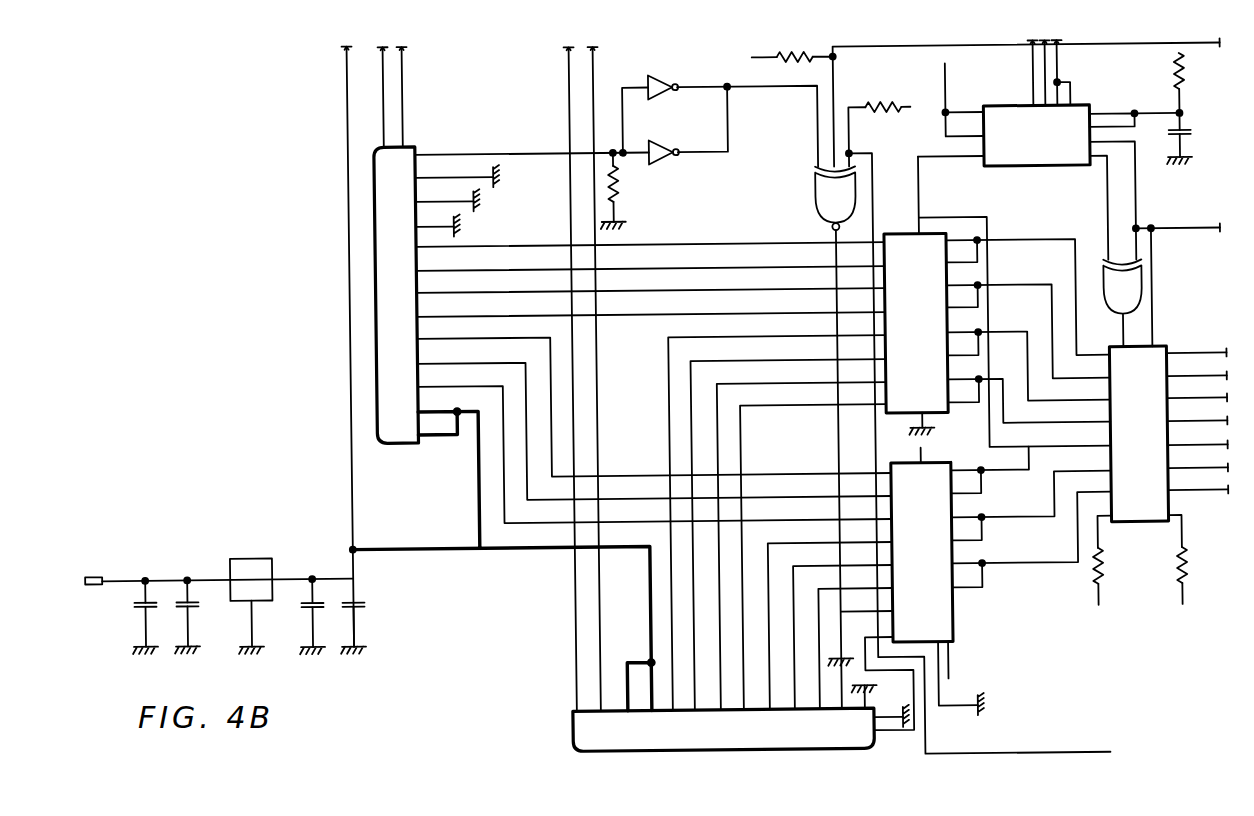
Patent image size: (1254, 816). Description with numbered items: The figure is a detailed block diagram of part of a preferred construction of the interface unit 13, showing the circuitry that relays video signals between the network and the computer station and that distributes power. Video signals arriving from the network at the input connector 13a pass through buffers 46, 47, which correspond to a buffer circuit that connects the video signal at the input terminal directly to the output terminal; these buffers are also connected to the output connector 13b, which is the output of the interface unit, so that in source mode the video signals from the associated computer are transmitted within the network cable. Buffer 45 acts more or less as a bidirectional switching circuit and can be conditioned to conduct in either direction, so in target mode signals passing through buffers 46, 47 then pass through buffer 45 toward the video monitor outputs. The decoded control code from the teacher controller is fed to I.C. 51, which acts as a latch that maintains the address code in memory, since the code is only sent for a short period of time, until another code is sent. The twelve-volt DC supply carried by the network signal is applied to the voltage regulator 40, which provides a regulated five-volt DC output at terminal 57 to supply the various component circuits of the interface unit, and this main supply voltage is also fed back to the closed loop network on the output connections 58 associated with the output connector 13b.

The interface unit 13 is at (500, 683).
The input connector 13a is at (399, 441).
The output connector 13b is at (569, 725).
The voltage regulator 40 is at (251, 556).
The buffer 45 is at (1161, 360).
The buffer 46 is at (901, 240).
The buffer 47 is at (936, 590).
The latch I.C. 51 is at (1040, 154).
The output supply terminal 57 is at (121, 572).
The output connections 58 is at (597, 621).